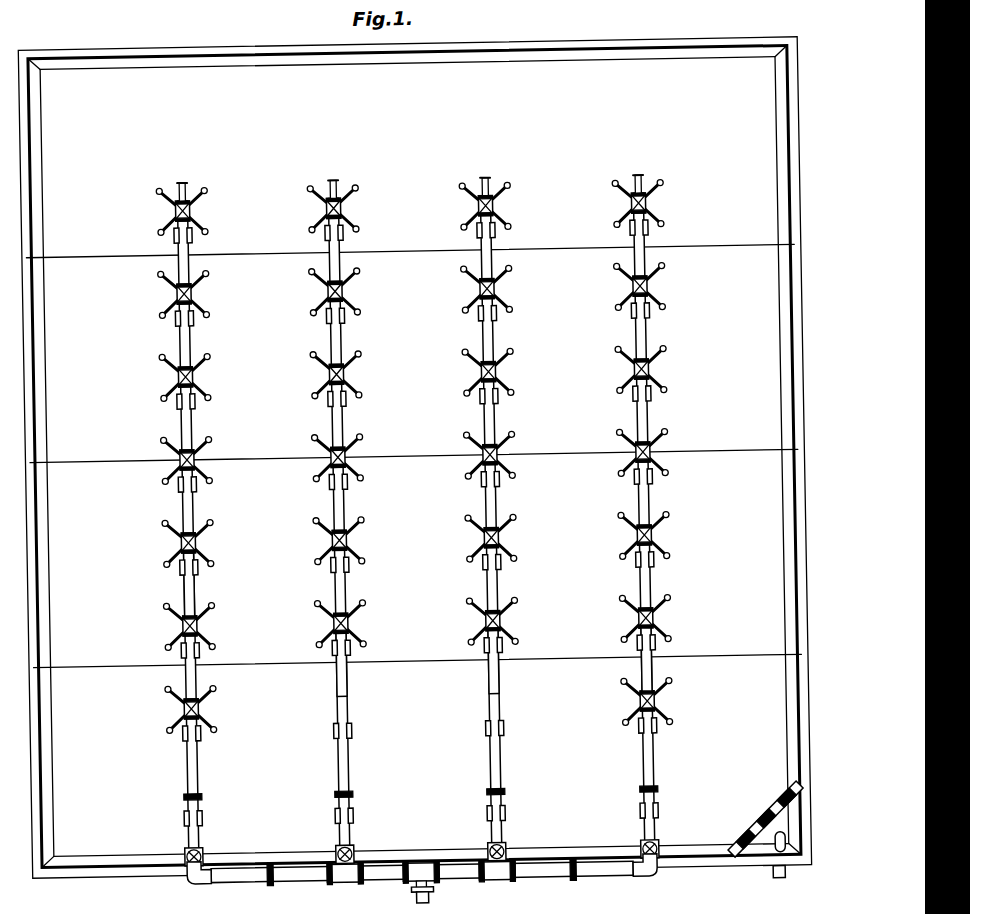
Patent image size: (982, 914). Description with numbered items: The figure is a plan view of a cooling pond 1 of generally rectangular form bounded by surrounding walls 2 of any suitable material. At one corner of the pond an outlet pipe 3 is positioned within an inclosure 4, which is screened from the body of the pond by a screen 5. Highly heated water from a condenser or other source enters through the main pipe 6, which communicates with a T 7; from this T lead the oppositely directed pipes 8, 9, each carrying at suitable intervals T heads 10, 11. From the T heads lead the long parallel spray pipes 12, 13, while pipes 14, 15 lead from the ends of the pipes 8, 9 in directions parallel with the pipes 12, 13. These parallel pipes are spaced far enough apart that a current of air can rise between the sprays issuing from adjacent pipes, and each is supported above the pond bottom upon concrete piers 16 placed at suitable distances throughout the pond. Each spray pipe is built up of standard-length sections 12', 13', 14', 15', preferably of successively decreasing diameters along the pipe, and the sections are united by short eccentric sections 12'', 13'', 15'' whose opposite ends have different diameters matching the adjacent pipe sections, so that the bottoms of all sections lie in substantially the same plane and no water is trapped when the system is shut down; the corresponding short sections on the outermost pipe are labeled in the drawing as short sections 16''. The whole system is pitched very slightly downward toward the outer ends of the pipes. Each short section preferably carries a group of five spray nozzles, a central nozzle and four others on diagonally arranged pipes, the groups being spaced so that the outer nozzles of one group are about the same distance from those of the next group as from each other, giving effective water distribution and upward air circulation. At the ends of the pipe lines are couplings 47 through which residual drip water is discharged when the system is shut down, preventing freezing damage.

The cooling pond 1 is at (748, 98).
The surrounding walls 2 is at (787, 191).
The outlet pipe 3 is at (777, 884).
The inclosure 4 is at (779, 842).
The screen 5 is at (766, 822).
The main pipe 6 is at (397, 892).
The T 7 is at (421, 870).
The oppositely directed pipe 8 is at (358, 886).
The oppositely directed pipe 9 is at (518, 886).
The T head 10 is at (326, 855).
The T head 11 is at (498, 861).
The pipe 12 is at (352, 525).
The pipe section 12' is at (372, 664).
The short pipe section 12'' is at (358, 416).
The pipe 13 is at (503, 523).
The pipe section 13' is at (522, 662).
The short pipe section 13'' is at (509, 414).
The pipe 14 is at (202, 535).
The pipe section 14' is at (218, 584).
The pipe 15 is at (657, 527).
The pipe section 15' is at (677, 659).
The short pipe section 15'' is at (666, 411).
The concrete piers 16 is at (418, 523).
The sprinkler head 16'' is at (207, 419).
The coupling 47 is at (410, 176).